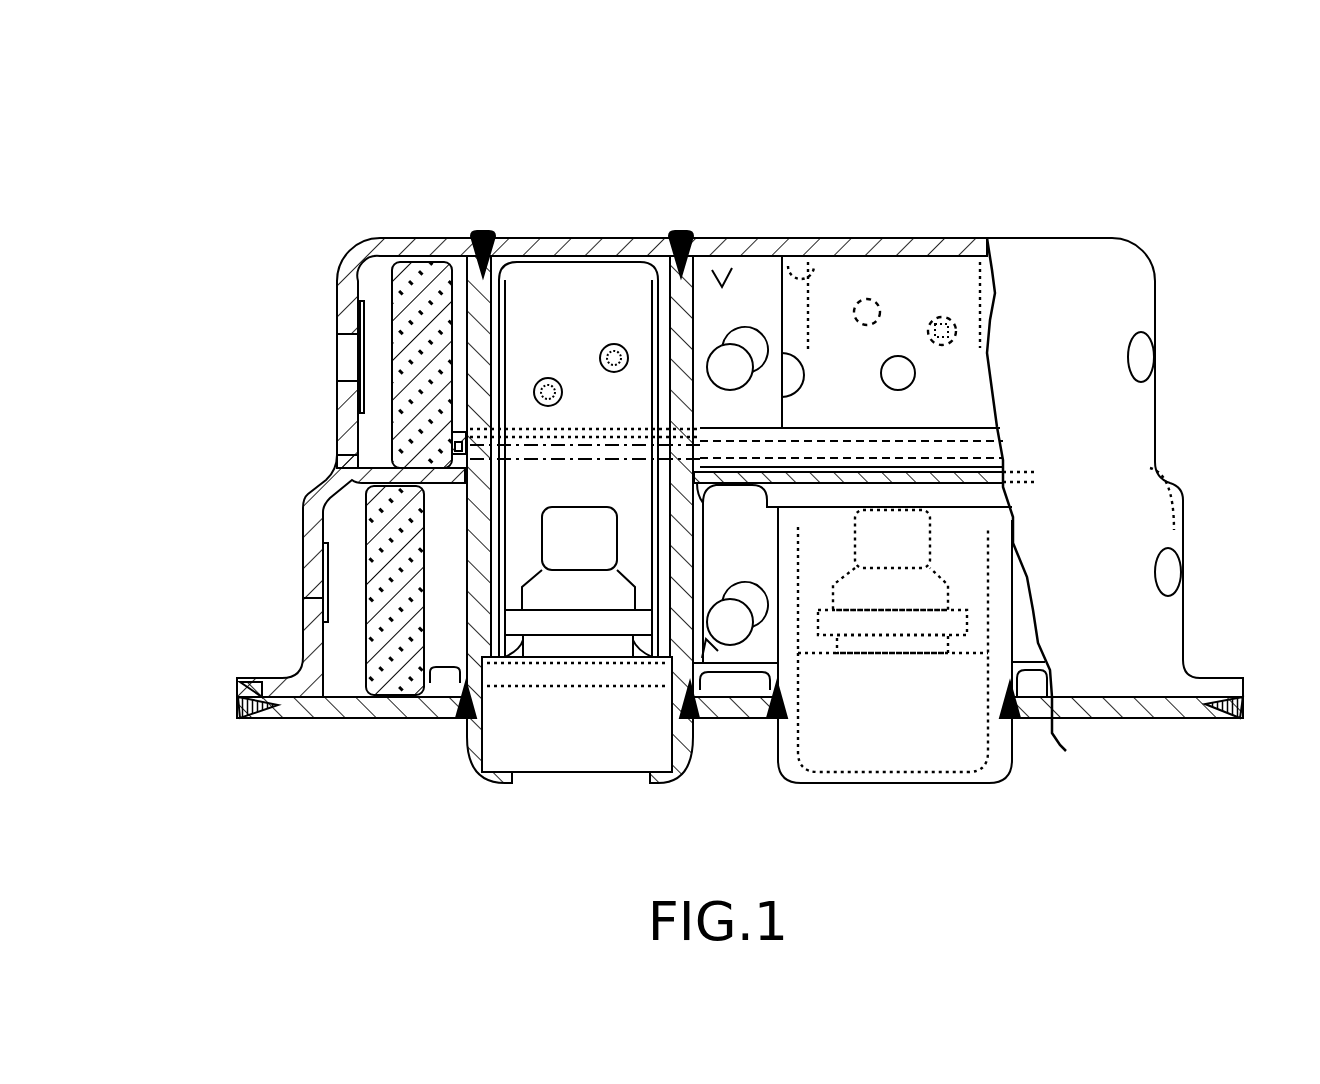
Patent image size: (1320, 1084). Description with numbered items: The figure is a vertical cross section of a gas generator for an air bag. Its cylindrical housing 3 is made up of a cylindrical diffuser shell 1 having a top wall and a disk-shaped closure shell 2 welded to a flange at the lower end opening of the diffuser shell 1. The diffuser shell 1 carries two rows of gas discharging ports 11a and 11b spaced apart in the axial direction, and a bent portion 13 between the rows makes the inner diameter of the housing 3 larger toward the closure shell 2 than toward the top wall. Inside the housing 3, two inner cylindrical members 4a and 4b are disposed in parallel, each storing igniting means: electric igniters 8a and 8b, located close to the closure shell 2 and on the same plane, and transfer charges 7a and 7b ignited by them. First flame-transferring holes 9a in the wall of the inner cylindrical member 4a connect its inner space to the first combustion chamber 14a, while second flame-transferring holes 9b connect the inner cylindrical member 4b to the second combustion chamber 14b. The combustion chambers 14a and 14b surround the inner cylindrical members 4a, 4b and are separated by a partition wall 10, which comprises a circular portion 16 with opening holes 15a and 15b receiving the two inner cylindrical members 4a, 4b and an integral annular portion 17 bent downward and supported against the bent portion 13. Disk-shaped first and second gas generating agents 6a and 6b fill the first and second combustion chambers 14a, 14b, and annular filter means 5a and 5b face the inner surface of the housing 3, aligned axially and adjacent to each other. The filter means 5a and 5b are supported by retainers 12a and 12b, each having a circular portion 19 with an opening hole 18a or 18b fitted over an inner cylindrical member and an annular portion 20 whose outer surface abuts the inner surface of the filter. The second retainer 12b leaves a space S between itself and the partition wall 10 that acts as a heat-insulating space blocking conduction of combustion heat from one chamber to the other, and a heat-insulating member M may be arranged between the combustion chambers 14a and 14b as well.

The diffuser shell 1 is at (313, 648).
The closure shell 2 is at (293, 718).
The cylindrical housing 3 is at (140, 628).
The inner cylindrical member 4a is at (487, 262).
The inner cylindrical member 4b is at (773, 250).
The filter means 5a is at (393, 697).
The filter means 5b is at (405, 265).
The first gas generating agent 6a is at (738, 600).
The second gas generating agent 6b is at (733, 340).
The transfer charge 7a is at (548, 380).
The transfer charge 7b is at (940, 316).
The igniter 8a is at (563, 549).
The igniter 8b is at (878, 554).
The first flame-transferring holes 9a is at (660, 700).
The second flame-transferring holes 9b is at (898, 357).
The partition wall 10 is at (273, 333).
The gas discharging ports 11a is at (1170, 574).
The gas discharging ports 11b is at (1155, 352).
The retainer 12a is at (759, 673).
The second retainer 12b is at (878, 428).
The bent portion 13 is at (1180, 485).
The first combustion chamber 14a is at (706, 642).
The second combustion chamber 14b is at (722, 280).
The opening hole 15a is at (483, 500).
The opening hole 15b is at (955, 512).
The circular portion 16 is at (345, 458).
The annular portion 17 is at (330, 512).
The opening hole 18a is at (665, 445).
The opening hole 18b is at (768, 467).
The circular portion 19 is at (722, 428).
The annular portion 20 is at (493, 458).
The heat-insulating member M is at (990, 432).
The space S is at (726, 468).